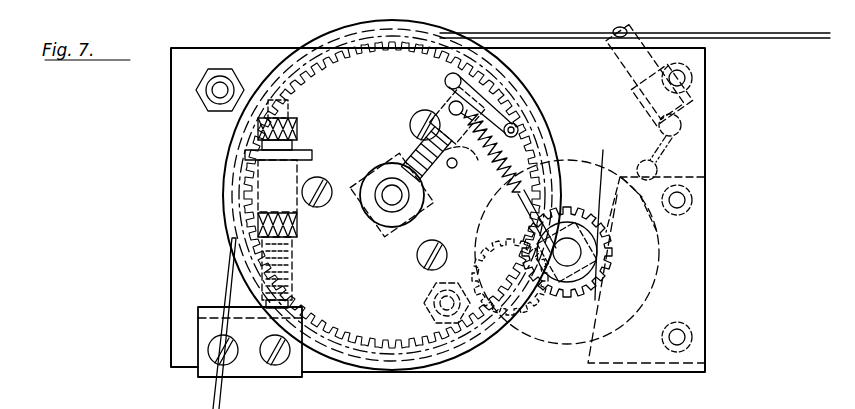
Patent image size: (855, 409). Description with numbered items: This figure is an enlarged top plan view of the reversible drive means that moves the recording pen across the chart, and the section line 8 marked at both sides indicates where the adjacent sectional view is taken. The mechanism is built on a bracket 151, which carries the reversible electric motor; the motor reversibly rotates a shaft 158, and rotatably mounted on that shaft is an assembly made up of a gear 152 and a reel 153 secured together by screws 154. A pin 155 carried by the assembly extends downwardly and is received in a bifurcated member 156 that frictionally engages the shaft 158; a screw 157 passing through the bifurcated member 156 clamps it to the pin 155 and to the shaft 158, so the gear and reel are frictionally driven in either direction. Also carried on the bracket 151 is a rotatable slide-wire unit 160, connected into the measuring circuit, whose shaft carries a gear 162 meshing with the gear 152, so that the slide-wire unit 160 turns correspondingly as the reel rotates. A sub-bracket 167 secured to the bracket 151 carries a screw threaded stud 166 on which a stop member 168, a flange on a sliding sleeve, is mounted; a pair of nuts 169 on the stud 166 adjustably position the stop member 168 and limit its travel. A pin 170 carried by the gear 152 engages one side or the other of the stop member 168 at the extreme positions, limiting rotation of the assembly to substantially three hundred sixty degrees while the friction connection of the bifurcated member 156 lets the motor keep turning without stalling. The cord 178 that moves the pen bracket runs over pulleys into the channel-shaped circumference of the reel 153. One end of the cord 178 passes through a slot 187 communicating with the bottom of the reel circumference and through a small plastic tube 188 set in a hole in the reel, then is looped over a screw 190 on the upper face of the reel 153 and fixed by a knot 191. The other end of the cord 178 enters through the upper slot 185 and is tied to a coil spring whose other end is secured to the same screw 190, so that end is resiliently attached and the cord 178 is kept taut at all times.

The section line 8- 8 is at (185, 193).
The bracket 151 is at (178, 262).
The gear 152 is at (478, 364).
The reel 153 is at (374, 347).
The screws 154 is at (412, 133).
The pin 155 is at (458, 127).
The bifurcated member 156 is at (530, 206).
The screw 157 is at (424, 212).
The shaft 158 is at (378, 206).
The rotatable slide-wire unit 160 is at (653, 283).
The gear 162 is at (603, 216).
The screw threaded stud 166 is at (238, 281).
The sub-bracket 167 is at (207, 325).
The stop member 168 is at (250, 151).
The nuts 169 is at (260, 130).
The pin 170 is at (464, 108).
The cord 178 is at (212, 390).
The slot 185 is at (525, 231).
The slot 187 is at (532, 97).
The small plastic tube 188 is at (518, 130).
The screw 190 is at (462, 81).
The knot 191 is at (490, 68).